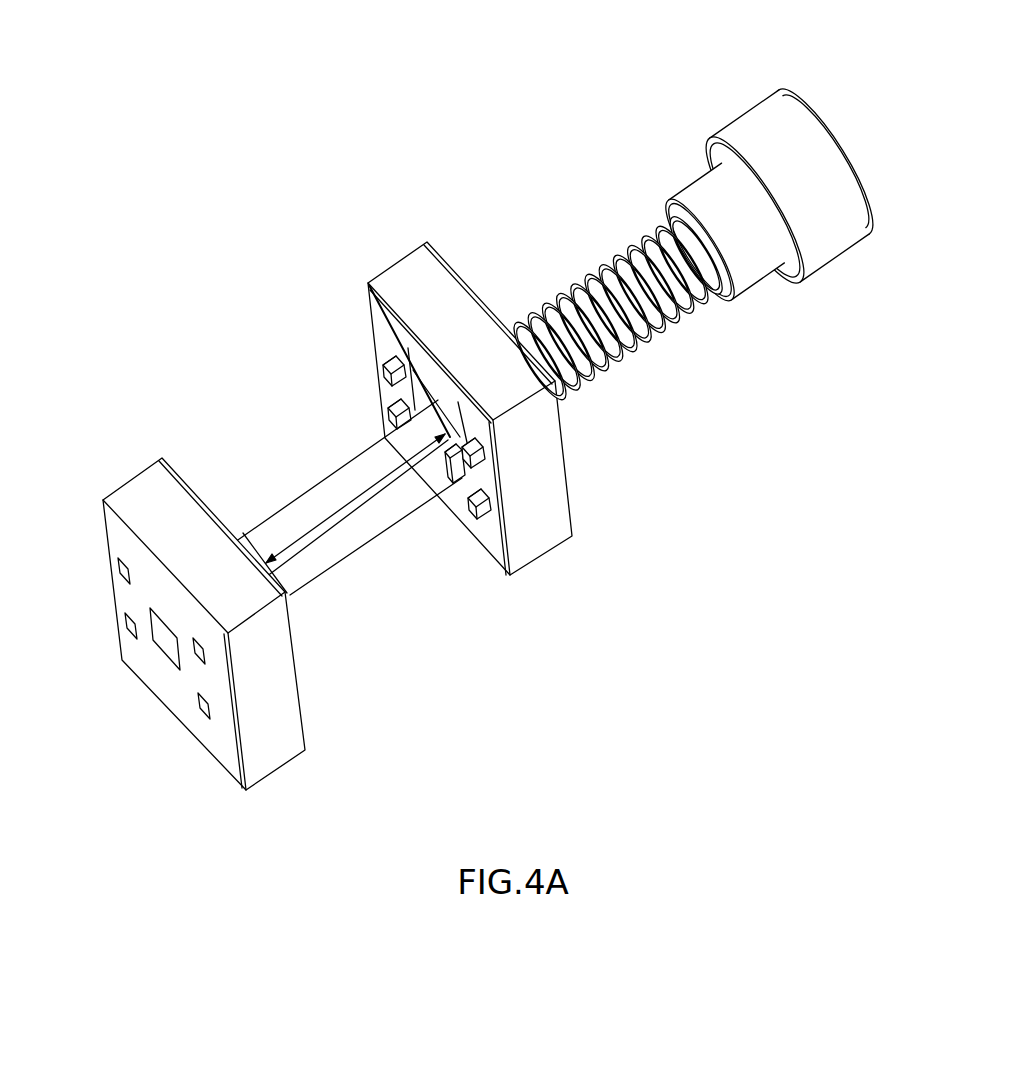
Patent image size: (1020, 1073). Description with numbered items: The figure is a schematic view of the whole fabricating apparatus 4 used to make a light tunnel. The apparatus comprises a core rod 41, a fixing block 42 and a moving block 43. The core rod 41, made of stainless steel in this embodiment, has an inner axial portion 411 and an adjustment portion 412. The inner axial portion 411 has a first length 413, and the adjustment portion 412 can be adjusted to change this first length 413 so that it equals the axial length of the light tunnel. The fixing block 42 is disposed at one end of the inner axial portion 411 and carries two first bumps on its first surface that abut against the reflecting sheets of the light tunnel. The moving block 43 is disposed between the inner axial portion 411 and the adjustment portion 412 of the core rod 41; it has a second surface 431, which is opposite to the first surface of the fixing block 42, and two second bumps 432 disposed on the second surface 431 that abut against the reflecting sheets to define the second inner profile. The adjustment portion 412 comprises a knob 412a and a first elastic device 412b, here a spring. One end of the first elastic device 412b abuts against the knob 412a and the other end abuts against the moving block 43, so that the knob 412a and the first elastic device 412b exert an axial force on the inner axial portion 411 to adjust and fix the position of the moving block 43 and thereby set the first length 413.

The fabricating apparatus 4 is at (361, 140).
The core rod 41 is at (700, 645).
The inner axial portion 411 is at (365, 522).
The adjustment portion 412 is at (648, 372).
The knob 412a is at (762, 142).
The first elastic device 412b is at (587, 270).
The first length 413 is at (351, 481).
The fixing block 42 is at (157, 505).
The moving block 43 is at (366, 274).
The second surface 431 is at (387, 338).
The second bumps 432 is at (413, 407).